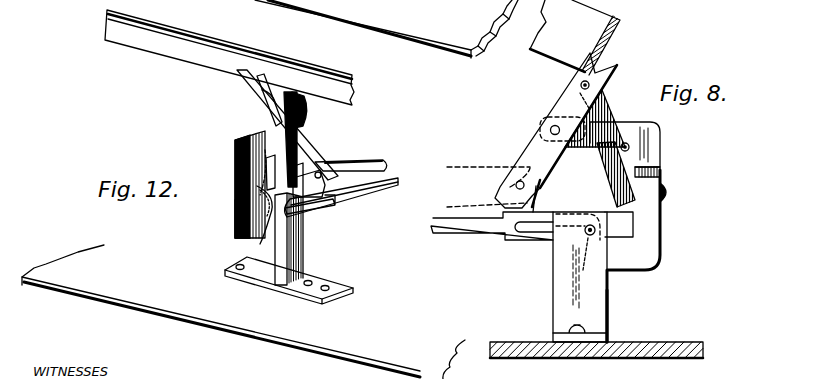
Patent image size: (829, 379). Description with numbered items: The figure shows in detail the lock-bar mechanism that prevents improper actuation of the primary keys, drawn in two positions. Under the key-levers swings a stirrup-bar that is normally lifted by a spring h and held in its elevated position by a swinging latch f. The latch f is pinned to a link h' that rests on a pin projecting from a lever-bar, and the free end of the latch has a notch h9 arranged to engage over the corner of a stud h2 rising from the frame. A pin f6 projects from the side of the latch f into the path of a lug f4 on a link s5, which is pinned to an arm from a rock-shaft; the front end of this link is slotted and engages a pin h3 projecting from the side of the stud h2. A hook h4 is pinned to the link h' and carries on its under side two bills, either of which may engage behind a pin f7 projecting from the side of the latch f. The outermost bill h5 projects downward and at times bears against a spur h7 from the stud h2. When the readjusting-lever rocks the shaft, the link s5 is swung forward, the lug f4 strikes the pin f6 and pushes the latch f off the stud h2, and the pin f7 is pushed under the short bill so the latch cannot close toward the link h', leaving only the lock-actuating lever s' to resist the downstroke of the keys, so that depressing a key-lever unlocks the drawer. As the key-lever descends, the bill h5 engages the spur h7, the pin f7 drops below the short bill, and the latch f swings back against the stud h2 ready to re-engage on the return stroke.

In FIG. 12, the spring h is at (229, 57).
In FIG. 8, the spring h is at (575, 37).
In FIG. 12, the link h' is at (289, 125).
In FIG. 8, the link h' is at (556, 130).
In FIG. 12, the stud h2 is at (304, 238).
In FIG. 8, the stud h2 is at (597, 302).
In FIG. 12, the pin h3 is at (280, 222).
In FIG. 8, the pin h3 is at (580, 277).
In FIG. 12, the hook h4 is at (235, 152).
In FIG. 8, the hook h4 is at (655, 133).
In FIG. 8, the outermost bill h5 is at (650, 162).
In FIG. 12, the spur h7 is at (235, 210).
In FIG. 8, the spur h7 is at (652, 242).
In FIG. 12, the notch h9 is at (258, 243).
In FIG. 8, the notch h9 is at (628, 200).
In FIG. 12, the swinging latch f is at (275, 132).
In FIG. 8, the swinging latch f is at (608, 106).
In FIG. 12, the lug f4 is at (318, 206).
In FIG. 8, the lug f4 is at (533, 214).
In FIG. 12, the link s5 is at (384, 194).
In FIG. 8, the link s5 is at (470, 237).
In FIG. 12, the pin f6 is at (300, 178).
In FIG. 8, the pin f6 is at (620, 146).
In FIG. 12, the pin f7 is at (266, 172).
In FIG. 8, the pin f7 is at (604, 168).
In FIG. 12, the lock-actuating lever s' is at (361, 152).
In FIG. 8, the lock-actuating lever s' is at (488, 154).